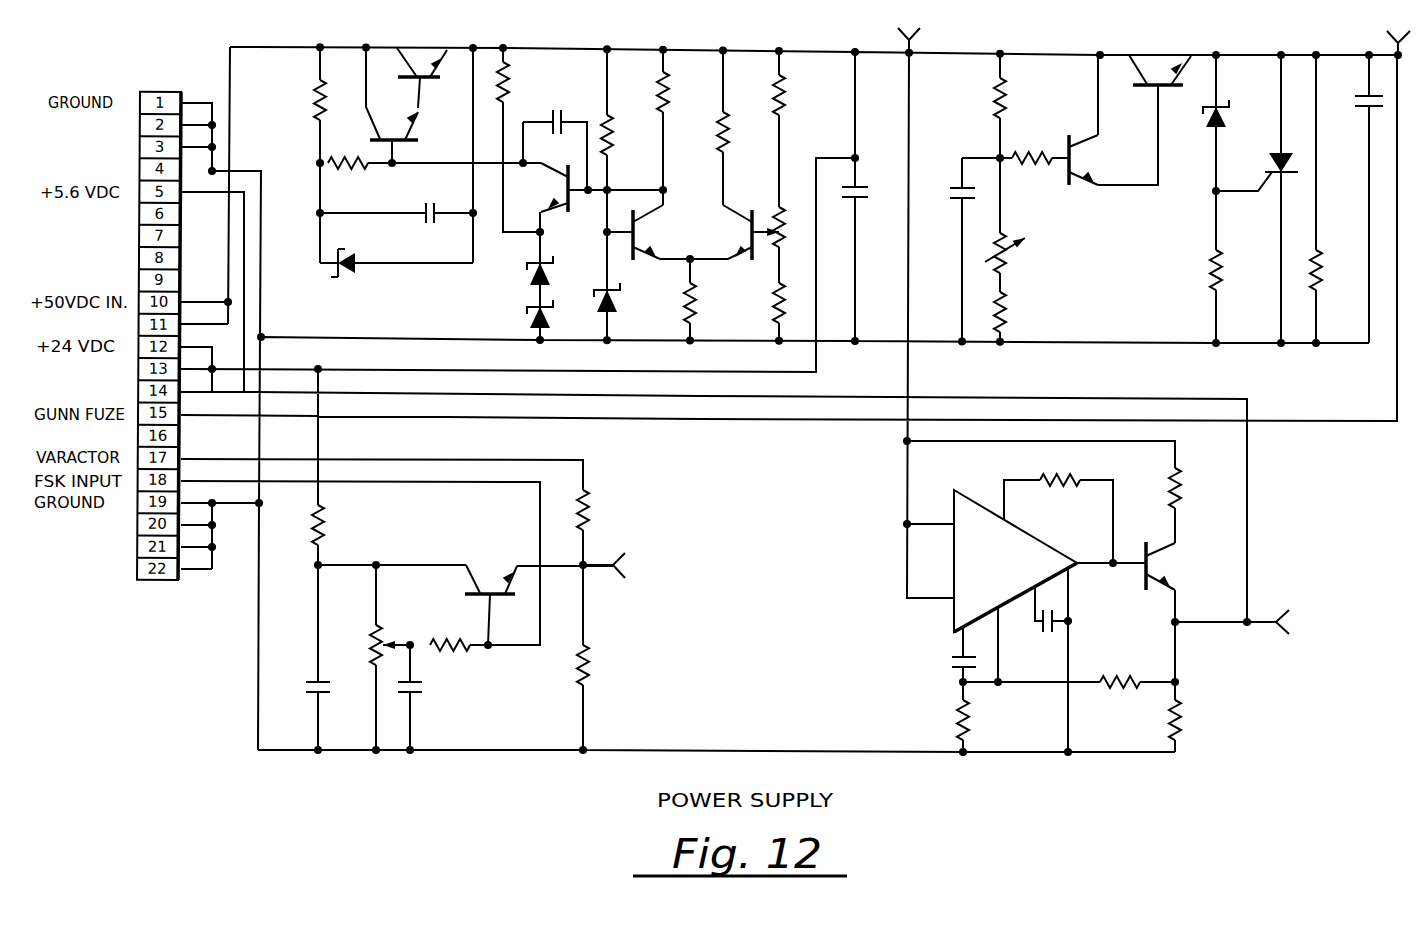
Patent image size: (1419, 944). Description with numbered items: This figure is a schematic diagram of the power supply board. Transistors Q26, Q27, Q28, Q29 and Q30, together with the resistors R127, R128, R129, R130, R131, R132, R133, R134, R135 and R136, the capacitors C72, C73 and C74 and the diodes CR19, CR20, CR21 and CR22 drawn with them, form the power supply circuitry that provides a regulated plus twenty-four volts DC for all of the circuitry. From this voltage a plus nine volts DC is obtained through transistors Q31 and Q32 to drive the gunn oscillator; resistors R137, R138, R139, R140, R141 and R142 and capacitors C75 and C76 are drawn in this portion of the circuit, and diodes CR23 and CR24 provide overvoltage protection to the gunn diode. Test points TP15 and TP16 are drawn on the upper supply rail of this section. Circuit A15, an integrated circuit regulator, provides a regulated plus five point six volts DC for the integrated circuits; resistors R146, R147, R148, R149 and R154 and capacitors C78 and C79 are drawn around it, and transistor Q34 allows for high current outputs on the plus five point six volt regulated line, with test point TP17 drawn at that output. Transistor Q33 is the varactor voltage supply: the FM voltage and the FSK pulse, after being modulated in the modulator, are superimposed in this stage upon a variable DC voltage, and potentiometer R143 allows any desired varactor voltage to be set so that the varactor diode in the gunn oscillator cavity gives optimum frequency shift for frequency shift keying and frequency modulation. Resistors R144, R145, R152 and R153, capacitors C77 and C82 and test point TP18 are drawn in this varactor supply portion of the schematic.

The resistor R127 270 ohm R127 is at (301, 99).
The resistor R128 1K R128 is at (352, 180).
The resistor R129 1.2K R129 is at (525, 80).
The resistor R130 680 ohm R130 is at (630, 136).
The resistor R131 15K R131 is at (687, 91).
The resistor R132 5.6K R132 is at (745, 137).
The resistor R133 2.2K R133 is at (669, 303).
The resistor R134 1.8K R134 is at (803, 95).
The resistor R135 200 ohm R135 is at (762, 212).
The resistor R136 430 ohm R136 is at (758, 303).
The resistor R137 1.4K R137 is at (1024, 97).
The resistor R138 3K R138 is at (1034, 177).
The variable resistor R139 500 ohm R139 is at (1026, 253).
The resistor R140 820 ohm R140 is at (1025, 312).
The resistor R141 2K R141 is at (1238, 270).
The resistor R142 1K R142 is at (1339, 270).
The potentiometer R143 is at (363, 643).
The resistor R144 3.3K R144 is at (450, 627).
The resistor R145 1K R145 is at (608, 665).
The resistor R146 5.6 R146 is at (1061, 499).
The resistor R147 100 ohm R147 is at (987, 720).
The resistor R148 255 ohm R148 is at (1120, 665).
The resistor R149 1K R149 is at (1199, 720).
The resistor R152 51 ohm R152 is at (608, 509).
The resistor R153 10 ohm R153 is at (342, 525).
The resistor R154 121 ohm R154 is at (1199, 488).
The capacitor C72 40 C72 is at (432, 232).
The capacitor C73 0.1 C73 is at (560, 126).
The capacitor C74 100 C74 is at (868, 213).
The capacitor C75 10 C75 is at (947, 213).
The capacitor C76 10 C76 is at (1358, 120).
The capacitor C77 6.8 C77 is at (424, 706).
The capacitor C78 47 pf C78 is at (941, 670).
The capacitor C79 2.2 C79 is at (1045, 640).
The capacitor C82 6.8 C82 is at (305, 706).
The transistor Q26 is at (392, 106).
The transistor Q27 is at (422, 68).
The transistor Q28 is at (554, 187).
The transistor Q29 is at (655, 232).
The transistor Q30 is at (744, 232).
The transistor Q31 is at (1088, 160).
The transistor Q32 is at (1160, 111).
The varactor voltage supply transistor Q33 is at (491, 597).
The transistor Q34 is at (1156, 566).
The diode CR19 is at (345, 275).
The zener diode CR20 is at (514, 272).
The zener diode CR21 is at (514, 314).
The zener diode CR22 is at (591, 305).
The diode CR23 is at (1233, 103).
The diode CR24 is at (1257, 161).
The integrated circuit regulator A15 is at (1021, 566).
The test point TP15 is at (909, 30).
The test point TP16 is at (1400, 33).
The test point TP17 is at (1288, 622).
The test point TP18 is at (625, 565).